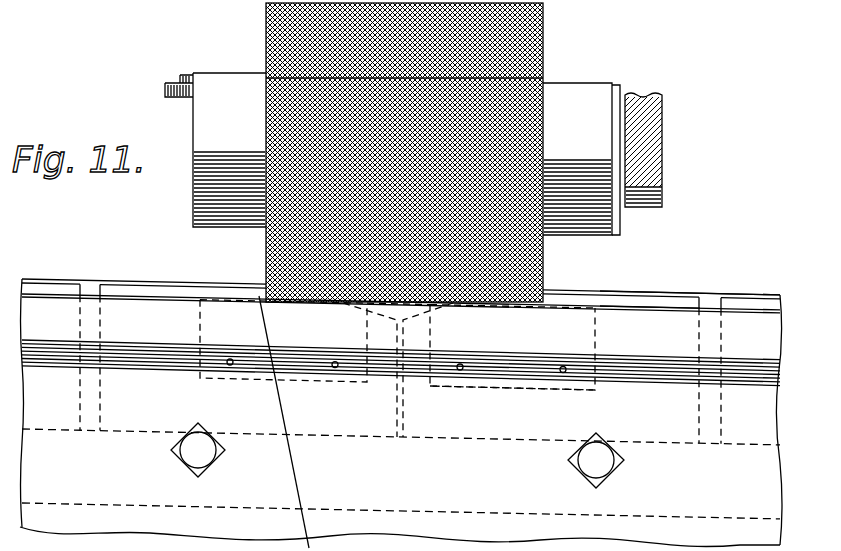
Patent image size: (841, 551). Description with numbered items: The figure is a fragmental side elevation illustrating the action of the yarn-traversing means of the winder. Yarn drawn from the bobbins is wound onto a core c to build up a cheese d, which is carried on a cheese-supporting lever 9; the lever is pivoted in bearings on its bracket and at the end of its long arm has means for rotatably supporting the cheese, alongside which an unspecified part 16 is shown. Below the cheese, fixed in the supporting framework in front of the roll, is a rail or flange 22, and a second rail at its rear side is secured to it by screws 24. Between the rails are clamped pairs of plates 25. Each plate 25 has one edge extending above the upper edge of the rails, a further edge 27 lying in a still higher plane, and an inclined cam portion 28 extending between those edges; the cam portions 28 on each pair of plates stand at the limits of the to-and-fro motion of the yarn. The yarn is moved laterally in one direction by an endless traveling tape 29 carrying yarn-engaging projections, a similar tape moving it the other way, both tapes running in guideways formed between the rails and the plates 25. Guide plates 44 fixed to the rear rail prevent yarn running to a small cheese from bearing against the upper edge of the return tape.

The core c is at (230, 80).
The cheese d is at (546, 37).
The collar 16 is at (620, 116).
The cheese-supporting lever 9 is at (662, 130).
The rail 22 is at (658, 320).
The screws 24 is at (215, 455).
The plates 25 is at (70, 290).
The edge 27 is at (634, 292).
The cam portion 28 is at (252, 296).
The endless traveling tape 29 is at (632, 308).
The guide plates 44 is at (452, 388).